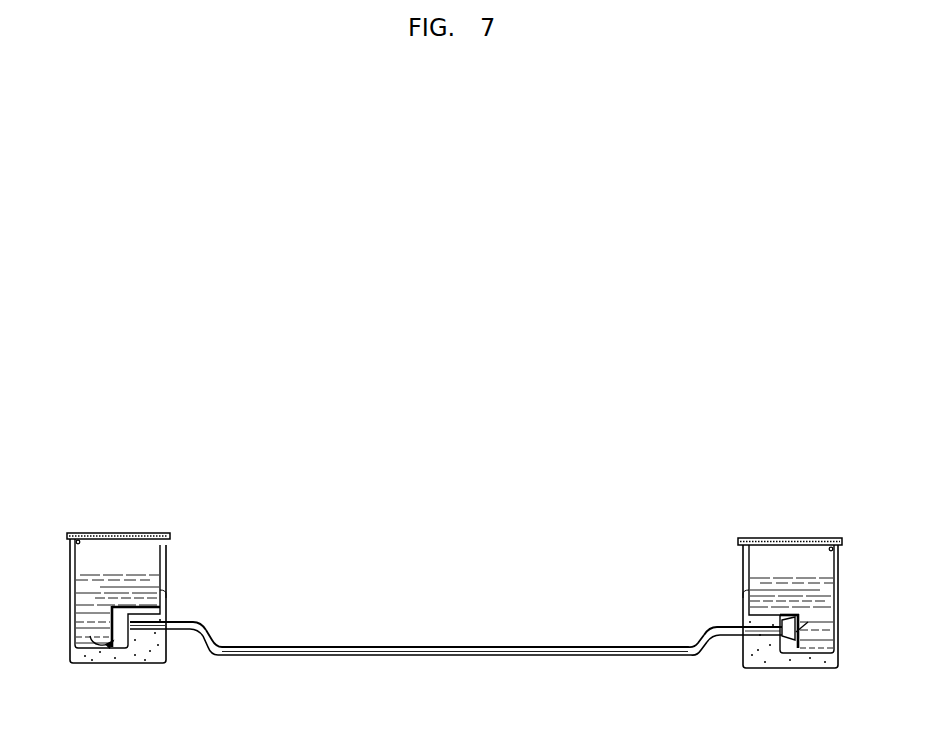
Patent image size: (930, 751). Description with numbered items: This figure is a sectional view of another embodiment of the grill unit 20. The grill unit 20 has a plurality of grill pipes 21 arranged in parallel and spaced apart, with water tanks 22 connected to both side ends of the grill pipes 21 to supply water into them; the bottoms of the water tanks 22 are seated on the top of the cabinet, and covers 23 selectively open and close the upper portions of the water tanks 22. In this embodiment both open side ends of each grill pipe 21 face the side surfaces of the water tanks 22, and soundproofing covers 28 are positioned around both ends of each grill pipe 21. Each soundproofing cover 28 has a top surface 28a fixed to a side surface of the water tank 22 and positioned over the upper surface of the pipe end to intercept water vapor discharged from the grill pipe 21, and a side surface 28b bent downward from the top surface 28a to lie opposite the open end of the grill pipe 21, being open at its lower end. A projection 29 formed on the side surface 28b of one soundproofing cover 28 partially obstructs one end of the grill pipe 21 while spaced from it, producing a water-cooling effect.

The grill unit 20 is at (434, 477).
The grill pipe 21 is at (497, 642).
The water tank 22 is at (172, 594).
The cover 23 is at (99, 534).
The soundproofing cover 28 is at (100, 609).
The top surface 28a is at (130, 606).
The side surface 28b is at (113, 626).
The projection 29 is at (784, 646).